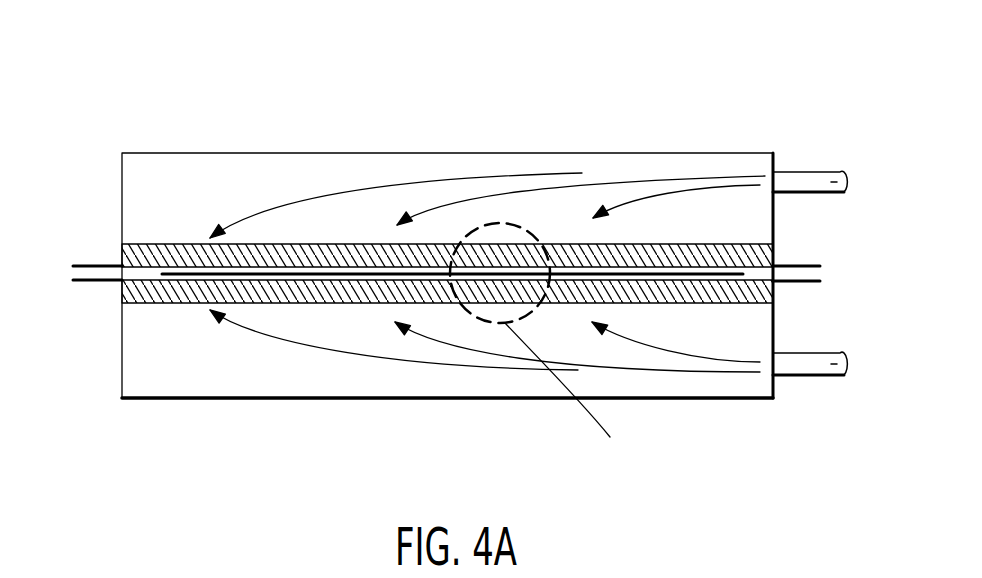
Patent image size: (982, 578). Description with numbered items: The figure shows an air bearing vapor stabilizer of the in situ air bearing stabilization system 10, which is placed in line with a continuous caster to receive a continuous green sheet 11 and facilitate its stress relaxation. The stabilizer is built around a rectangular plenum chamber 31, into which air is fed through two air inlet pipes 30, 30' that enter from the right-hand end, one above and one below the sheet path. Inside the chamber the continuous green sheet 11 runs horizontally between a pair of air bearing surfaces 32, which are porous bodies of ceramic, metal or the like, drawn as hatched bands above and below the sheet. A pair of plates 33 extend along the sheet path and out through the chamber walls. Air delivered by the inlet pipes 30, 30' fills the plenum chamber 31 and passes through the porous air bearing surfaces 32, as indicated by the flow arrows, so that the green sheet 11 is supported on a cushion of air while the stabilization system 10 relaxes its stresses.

The air bearing stabilization system 10 is at (552, 107).
The continuous green sheet 11 is at (302, 270).
The air inlet pipe 30 is at (810, 135).
The air inlet pipe 30' is at (814, 410).
The plenum chamber 31 is at (162, 190).
The air bearing surface 32 is at (347, 283).
The plate 33 is at (135, 295).